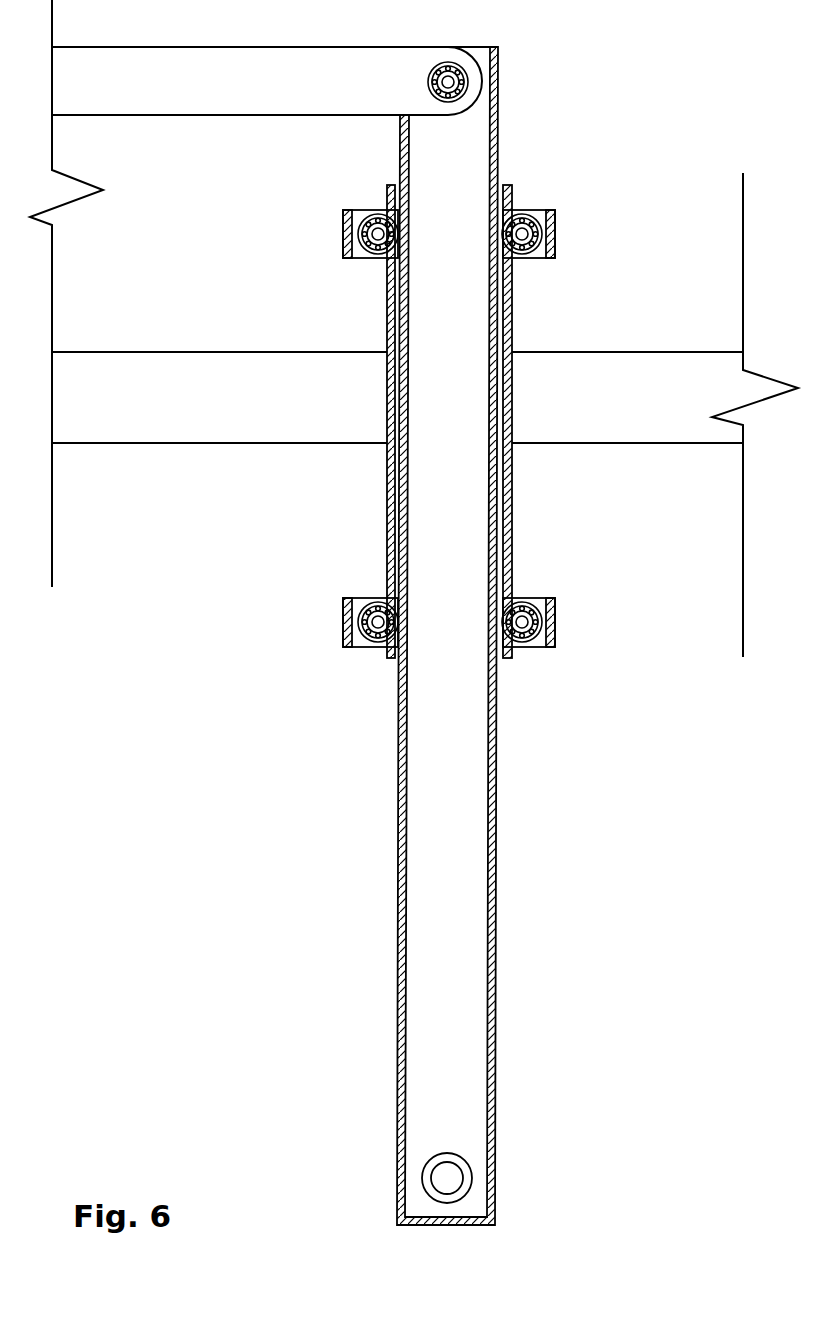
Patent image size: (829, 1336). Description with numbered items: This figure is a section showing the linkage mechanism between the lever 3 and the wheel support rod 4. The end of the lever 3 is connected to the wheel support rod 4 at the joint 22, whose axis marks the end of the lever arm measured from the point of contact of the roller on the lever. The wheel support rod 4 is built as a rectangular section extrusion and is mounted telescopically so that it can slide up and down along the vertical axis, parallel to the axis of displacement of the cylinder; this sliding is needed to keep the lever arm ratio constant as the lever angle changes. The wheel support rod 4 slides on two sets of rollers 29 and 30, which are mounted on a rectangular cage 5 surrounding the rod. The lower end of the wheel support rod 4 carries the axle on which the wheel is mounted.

The lever 3 is at (268, 60).
The wheel support rod 4 is at (466, 903).
The rectangular cage 5 is at (512, 531).
The joint 22 is at (449, 62).
The rollers 29 is at (343, 236).
The rollers 30 is at (343, 620).